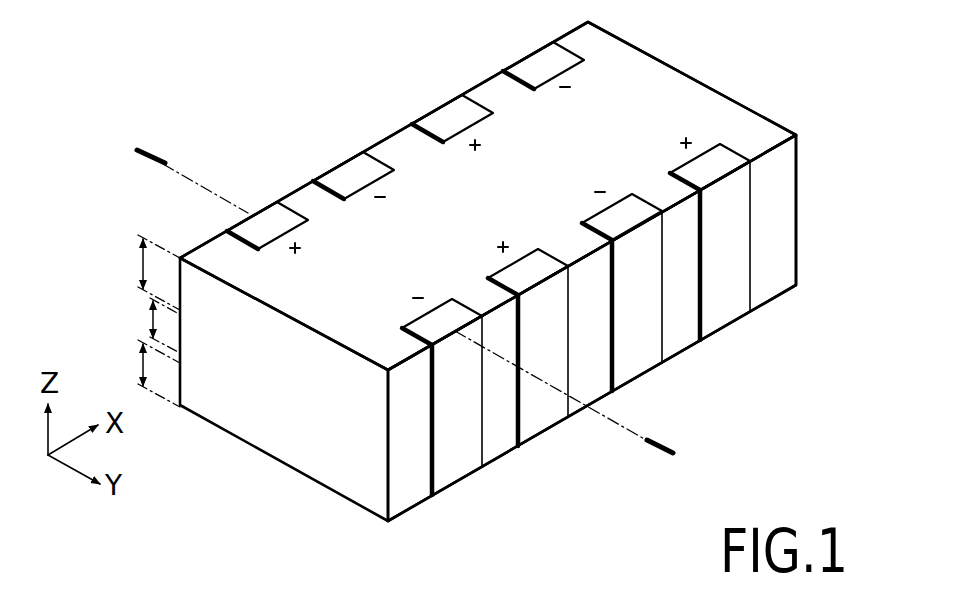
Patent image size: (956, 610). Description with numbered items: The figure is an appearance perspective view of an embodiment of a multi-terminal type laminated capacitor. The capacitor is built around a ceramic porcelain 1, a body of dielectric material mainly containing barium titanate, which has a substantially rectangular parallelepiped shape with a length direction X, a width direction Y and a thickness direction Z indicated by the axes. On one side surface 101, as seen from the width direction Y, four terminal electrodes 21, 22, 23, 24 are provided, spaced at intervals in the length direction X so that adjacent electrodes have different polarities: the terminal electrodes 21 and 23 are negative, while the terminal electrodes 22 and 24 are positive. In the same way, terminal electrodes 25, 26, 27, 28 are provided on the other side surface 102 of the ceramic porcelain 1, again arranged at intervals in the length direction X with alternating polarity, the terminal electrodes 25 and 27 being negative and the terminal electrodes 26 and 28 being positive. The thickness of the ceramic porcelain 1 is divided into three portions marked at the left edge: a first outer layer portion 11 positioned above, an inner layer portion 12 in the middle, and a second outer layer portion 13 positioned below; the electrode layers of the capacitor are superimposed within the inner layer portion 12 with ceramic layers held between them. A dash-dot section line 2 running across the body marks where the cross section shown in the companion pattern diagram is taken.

The ceramic porcelain 1 is at (678, 87).
The one side surface 101 is at (402, 480).
The other side surface 102 is at (293, 192).
The first outer layer portion 11 is at (143, 265).
The inner layer portion 12 is at (153, 320).
The second outer layer portion 13 is at (143, 363).
The terminal electrode 21 is at (450, 462).
The terminal electrode 22 is at (530, 415).
The terminal electrode 23 is at (633, 355).
The terminal electrode 24 is at (720, 308).
The terminal electrode 25 is at (538, 67).
The terminal electrode 26 is at (447, 115).
The terminal electrode 27 is at (358, 172).
The terminal electrode 28 is at (253, 232).
The line 2- 2 is at (146, 164).